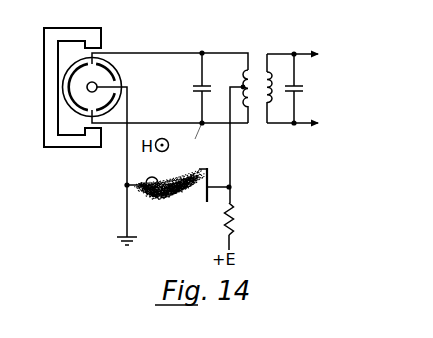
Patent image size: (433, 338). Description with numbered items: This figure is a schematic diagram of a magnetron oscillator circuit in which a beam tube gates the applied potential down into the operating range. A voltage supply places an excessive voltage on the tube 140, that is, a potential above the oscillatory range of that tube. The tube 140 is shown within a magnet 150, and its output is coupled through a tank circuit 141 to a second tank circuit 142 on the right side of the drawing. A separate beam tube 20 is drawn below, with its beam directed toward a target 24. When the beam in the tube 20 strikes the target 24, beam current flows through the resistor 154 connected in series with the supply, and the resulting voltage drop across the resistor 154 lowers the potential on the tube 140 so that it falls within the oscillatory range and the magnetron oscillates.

The permanent magnet 150 is at (67, 28).
The tube 140 is at (122, 79).
The primary tank circuit 141 is at (219, 51).
The secondary tank circuit 142 is at (280, 51).
The target 24 is at (207, 168).
The tube 20 is at (181, 235).
The resistor 154 is at (235, 220).